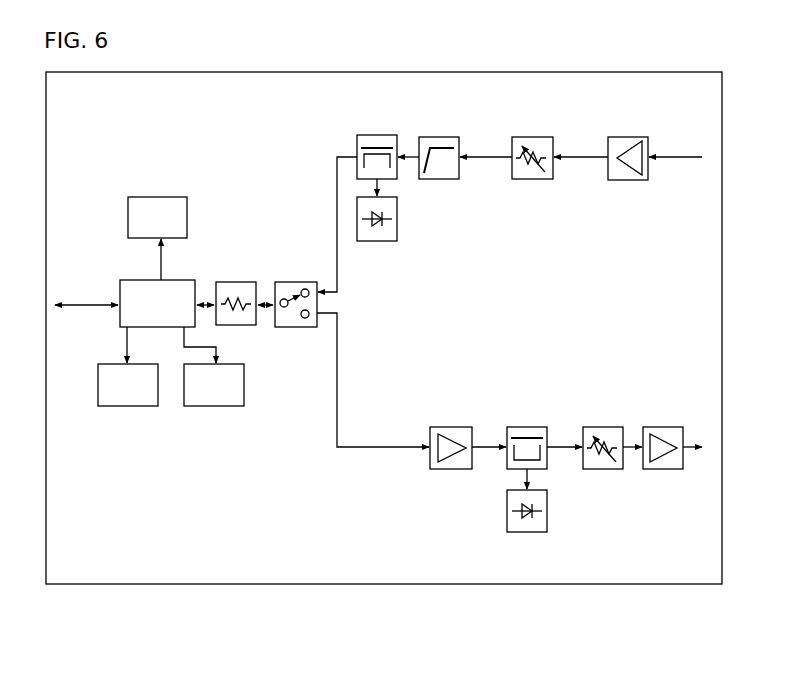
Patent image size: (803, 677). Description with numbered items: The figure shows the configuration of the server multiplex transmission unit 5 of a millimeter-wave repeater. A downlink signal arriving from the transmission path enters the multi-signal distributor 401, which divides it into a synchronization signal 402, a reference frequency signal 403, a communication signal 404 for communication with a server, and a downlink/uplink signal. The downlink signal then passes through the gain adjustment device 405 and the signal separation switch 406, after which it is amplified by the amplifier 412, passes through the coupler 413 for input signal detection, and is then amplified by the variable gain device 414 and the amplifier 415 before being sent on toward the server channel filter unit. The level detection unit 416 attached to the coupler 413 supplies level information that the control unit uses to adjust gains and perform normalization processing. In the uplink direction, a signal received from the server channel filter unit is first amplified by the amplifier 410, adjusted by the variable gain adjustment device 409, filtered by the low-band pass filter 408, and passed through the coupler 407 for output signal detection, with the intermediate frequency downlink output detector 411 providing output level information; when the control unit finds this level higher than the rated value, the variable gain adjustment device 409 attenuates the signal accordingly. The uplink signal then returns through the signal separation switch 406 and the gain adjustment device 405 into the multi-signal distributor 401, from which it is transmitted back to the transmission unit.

The server multiplex transmission unit 5 is at (377, 584).
The multi-signal distributor 401 is at (182, 280).
The synchronization signal 402 is at (158, 197).
The reference frequency signal 403 is at (130, 406).
The communication signal 404 is at (216, 406).
The gain adjustment device 405 is at (234, 282).
The signal separation switch 406 is at (293, 282).
The coupler 407 is at (373, 135).
The low-band pass filter 408 is at (440, 137).
The variable gain adjustment device 409 is at (532, 137).
The amplifier 410 is at (628, 137).
The intermediate frequency downlink output detector 411 is at (377, 241).
The amplifier 412 is at (450, 427).
The coupler 413 is at (525, 427).
The variable gain device 414 is at (598, 427).
The amplifier 415 is at (658, 427).
The level detection unit 416 is at (527, 532).